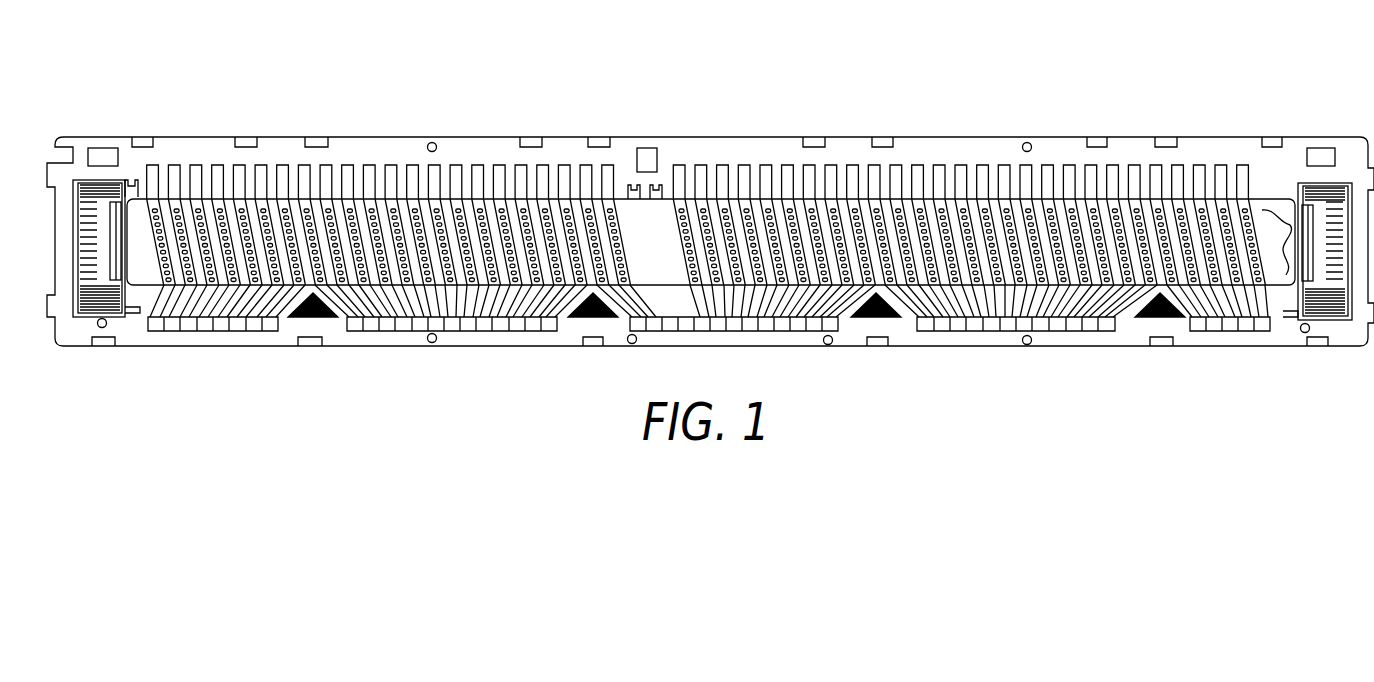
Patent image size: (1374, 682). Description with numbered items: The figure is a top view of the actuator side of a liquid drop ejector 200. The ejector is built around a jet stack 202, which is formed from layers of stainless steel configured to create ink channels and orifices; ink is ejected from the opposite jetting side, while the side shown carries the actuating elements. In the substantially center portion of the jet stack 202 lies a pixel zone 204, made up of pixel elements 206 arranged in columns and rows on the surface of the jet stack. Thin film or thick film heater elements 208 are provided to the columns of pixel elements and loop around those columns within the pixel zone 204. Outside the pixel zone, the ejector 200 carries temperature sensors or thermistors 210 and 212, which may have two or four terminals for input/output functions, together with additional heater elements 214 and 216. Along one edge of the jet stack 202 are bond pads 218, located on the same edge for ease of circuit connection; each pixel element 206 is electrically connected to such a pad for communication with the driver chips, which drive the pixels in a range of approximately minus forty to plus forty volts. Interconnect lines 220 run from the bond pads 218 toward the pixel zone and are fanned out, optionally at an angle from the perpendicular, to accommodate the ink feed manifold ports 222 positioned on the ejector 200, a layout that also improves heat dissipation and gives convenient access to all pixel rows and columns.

The liquid drop ejector 200 is at (803, 82).
The jet stack 202 is at (676, 148).
The pixel zone 204 is at (1268, 212).
The pixel elements 206 is at (1163, 220).
The heater elements 208 is at (285, 162).
The thermistor 210 is at (118, 203).
The thermistor 212 is at (1308, 272).
The heater element 214 is at (90, 185).
The heater element 216 is at (1327, 190).
The bond pads 218 is at (155, 331).
The interconnect lines 220 is at (295, 308).
The ink feed manifold ports 222 is at (594, 340).